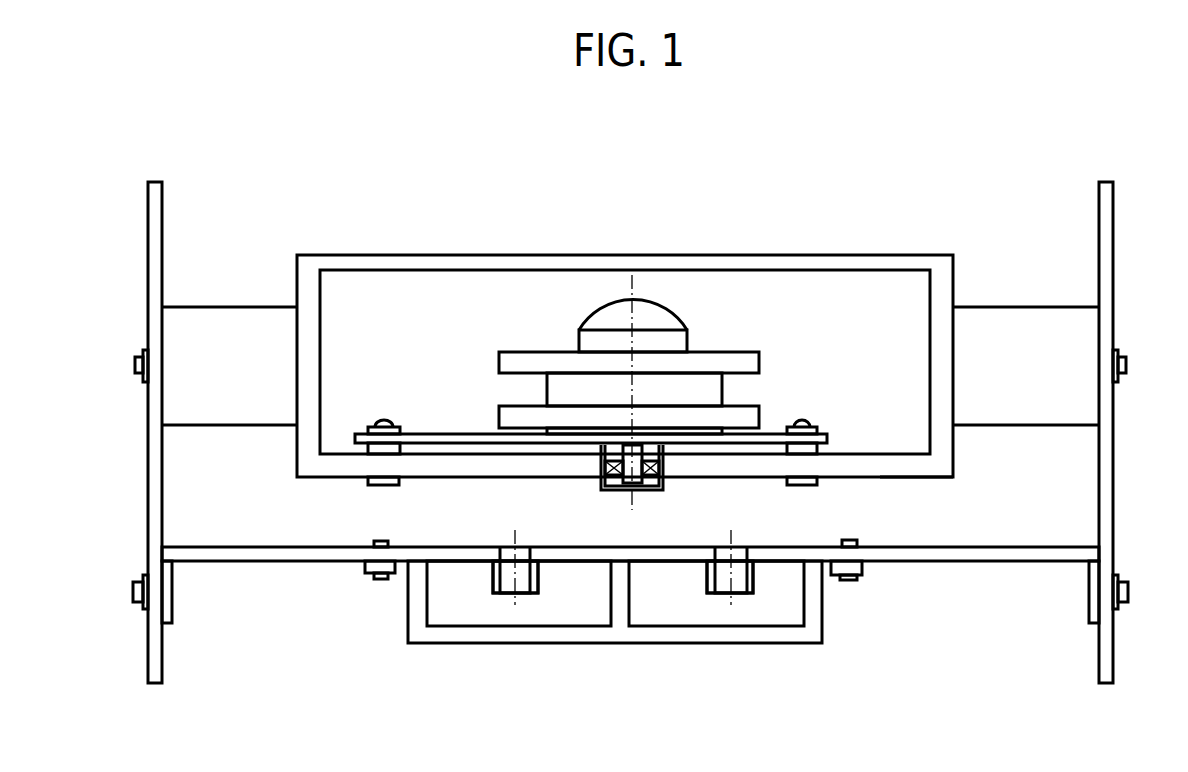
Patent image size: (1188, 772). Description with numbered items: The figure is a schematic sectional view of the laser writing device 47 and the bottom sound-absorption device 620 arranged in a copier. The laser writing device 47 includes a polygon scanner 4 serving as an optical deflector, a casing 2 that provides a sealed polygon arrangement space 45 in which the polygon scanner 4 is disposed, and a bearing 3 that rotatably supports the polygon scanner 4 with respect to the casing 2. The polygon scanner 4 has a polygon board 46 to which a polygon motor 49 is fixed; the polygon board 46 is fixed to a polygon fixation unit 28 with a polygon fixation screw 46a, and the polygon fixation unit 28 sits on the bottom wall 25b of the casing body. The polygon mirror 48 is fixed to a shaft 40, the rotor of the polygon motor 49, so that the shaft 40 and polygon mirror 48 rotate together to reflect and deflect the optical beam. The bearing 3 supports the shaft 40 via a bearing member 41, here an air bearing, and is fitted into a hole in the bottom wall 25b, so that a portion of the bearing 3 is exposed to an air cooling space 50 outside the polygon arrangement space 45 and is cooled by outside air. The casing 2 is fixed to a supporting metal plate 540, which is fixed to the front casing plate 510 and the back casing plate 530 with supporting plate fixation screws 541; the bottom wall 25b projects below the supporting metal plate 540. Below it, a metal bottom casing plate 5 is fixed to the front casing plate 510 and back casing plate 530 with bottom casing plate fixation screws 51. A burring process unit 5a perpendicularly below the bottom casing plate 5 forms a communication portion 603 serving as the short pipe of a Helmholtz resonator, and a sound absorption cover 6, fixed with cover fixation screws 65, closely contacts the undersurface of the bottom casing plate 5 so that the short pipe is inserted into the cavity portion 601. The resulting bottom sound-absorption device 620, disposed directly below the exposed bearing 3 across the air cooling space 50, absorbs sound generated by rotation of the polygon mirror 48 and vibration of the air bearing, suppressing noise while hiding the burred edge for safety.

The casing 2 is at (938, 250).
The bearing 3 is at (658, 491).
The polygon scanner 4 is at (603, 283).
The bottom casing plate 5 is at (1020, 563).
The burring process unit 5a is at (487, 585).
The sound absorption cover 6 is at (615, 630).
The bottom wall 25b is at (927, 478).
The polygon fixation unit 28 is at (386, 486).
The shaft 40 is at (622, 490).
The bearing member 41 is at (650, 490).
The polygon arrangement space 45 is at (425, 300).
The polygon board 46 is at (445, 433).
The polygon fixation screw 46a is at (383, 424).
The laser writing device 47 is at (882, 160).
The polygon mirror 48 is at (759, 415).
The polygon motor 49 is at (547, 382).
The air cooling space 50 is at (1073, 493).
The bottom casing plate fixation screws 51 is at (133, 593).
The cover fixation screws 65 is at (365, 567).
The front casing plate 510 is at (1113, 237).
The back casing plate 530 is at (148, 238).
The supporting metal plate 540 is at (241, 307).
The supporting plate fixation screws 541 is at (135, 366).
The cavity portion 601 is at (575, 615).
The communication portion 603 is at (517, 600).
The bottom sound-absorption device 620 is at (842, 652).